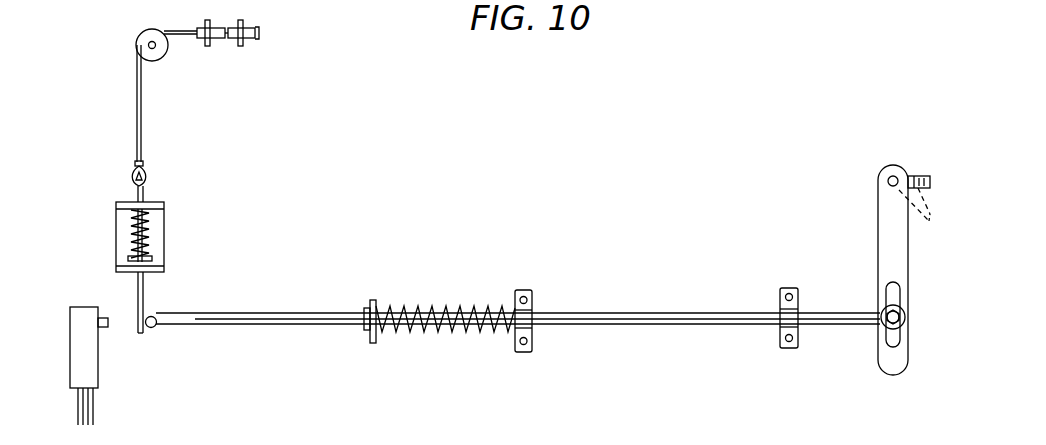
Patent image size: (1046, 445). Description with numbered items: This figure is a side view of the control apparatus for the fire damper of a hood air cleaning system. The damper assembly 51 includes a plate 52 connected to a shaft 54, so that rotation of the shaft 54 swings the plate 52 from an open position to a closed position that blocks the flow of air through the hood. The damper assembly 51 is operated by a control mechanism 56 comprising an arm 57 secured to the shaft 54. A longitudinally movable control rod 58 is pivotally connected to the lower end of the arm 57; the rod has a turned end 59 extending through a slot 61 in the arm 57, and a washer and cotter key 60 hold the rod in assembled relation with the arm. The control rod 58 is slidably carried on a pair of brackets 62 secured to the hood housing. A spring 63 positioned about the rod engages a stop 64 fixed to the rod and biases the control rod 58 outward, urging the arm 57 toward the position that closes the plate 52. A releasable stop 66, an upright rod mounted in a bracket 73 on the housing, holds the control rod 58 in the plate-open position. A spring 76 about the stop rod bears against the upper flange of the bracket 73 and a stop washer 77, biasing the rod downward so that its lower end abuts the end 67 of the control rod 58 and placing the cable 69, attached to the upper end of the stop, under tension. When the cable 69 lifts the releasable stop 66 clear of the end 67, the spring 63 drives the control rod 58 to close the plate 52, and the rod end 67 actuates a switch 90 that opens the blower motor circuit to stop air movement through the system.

The damper assembly 51 is at (878, 153).
The plate 52 is at (926, 175).
The shaft 54 is at (880, 180).
The control mechanism 56 is at (470, 264).
The arm 57 is at (888, 228).
The control rod 58 is at (680, 321).
The turned end 59 is at (898, 313).
The washer and cotter key 60 is at (900, 321).
The slot 61 is at (886, 290).
The brackets 62 is at (533, 313).
The spring 63 is at (448, 324).
The stop 64 is at (371, 303).
The releasable stop 66 is at (137, 293).
The end of control rod 67 is at (156, 318).
The cable 69 is at (142, 116).
The bracket 73 is at (160, 223).
The spring 76 is at (152, 247).
The stop washer 77 is at (130, 257).
The switch 90 is at (92, 365).